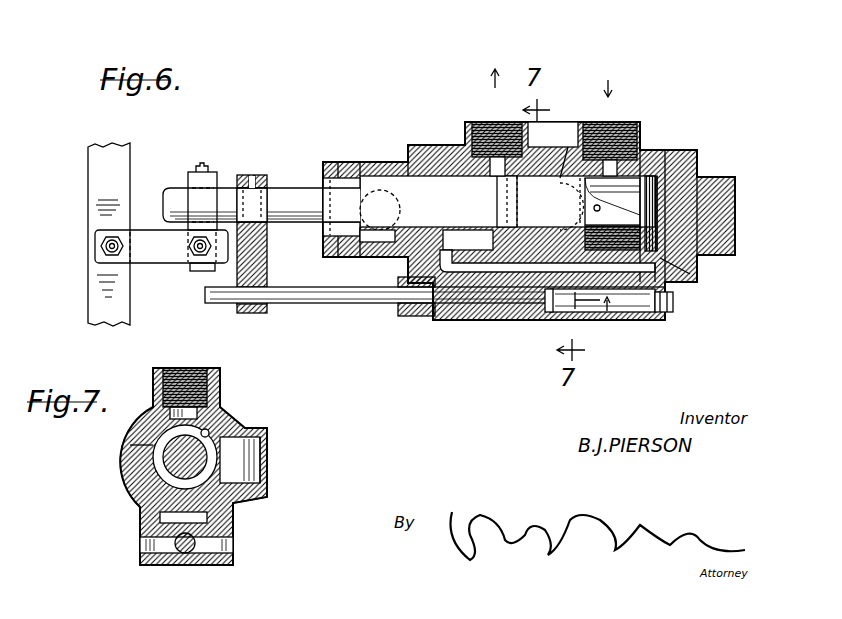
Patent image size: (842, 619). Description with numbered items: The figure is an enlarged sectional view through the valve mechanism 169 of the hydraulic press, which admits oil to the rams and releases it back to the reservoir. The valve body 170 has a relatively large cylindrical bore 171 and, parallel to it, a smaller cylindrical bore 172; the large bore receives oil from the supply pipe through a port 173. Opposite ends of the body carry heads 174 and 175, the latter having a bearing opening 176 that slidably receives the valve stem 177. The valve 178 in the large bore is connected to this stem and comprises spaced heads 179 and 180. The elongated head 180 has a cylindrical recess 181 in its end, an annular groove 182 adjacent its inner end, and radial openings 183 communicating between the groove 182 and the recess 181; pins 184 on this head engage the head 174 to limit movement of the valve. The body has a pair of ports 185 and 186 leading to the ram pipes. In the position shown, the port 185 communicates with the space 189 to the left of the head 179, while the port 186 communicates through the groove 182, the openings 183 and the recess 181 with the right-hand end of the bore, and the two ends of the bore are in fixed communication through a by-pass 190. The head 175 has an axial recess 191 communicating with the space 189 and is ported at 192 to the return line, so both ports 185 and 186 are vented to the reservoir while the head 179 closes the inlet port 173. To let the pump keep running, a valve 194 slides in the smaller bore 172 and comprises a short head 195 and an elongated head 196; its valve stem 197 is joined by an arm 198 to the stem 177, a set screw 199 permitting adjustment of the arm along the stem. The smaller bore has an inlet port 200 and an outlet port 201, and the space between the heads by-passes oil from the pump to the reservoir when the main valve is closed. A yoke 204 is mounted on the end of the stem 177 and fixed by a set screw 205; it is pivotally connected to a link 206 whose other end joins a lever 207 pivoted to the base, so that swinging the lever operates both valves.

In FIG. 6, the valve mechanism 169 is at (432, 143).
In FIG. 7, the valve mechanism 169 is at (129, 420).
In FIG. 6, the valve body 170 is at (642, 147).
In FIG. 7, the valve body 170 is at (209, 432).
In FIG. 6, the cylindrical bore 171 is at (553, 150).
In FIG. 7, the cylindrical bore 171 is at (150, 446).
In FIG. 6, the cylindrical bore 172 is at (485, 320).
In FIG. 6, the port 173 is at (550, 203).
In FIG. 7, the port 173 is at (255, 470).
In FIG. 6, the head 174 is at (712, 176).
In FIG. 6, the head 175 is at (372, 157).
In FIG. 6, the bearing opening 176 is at (324, 180).
In FIG. 6, the valve stem 177 is at (312, 224).
In FIG. 7, the valve stem 177 is at (168, 463).
In FIG. 6, the valve 178 is at (490, 200).
In FIG. 6, the head 179 is at (497, 213).
In FIG. 6, the head 180 is at (652, 174).
In FIG. 6, the cylindrical recess 181 is at (648, 168).
In FIG. 6, the annular groove 182 is at (547, 261).
In FIG. 6, the radial openings 183 is at (612, 214).
In FIG. 6, the pins 184 is at (705, 170).
In FIG. 6, the port 185 is at (518, 125).
In FIG. 7, the port 185 is at (186, 420).
In FIG. 6, the port 186 is at (610, 160).
In FIG. 6, the space 189 is at (468, 240).
In FIG. 6, the by-pass 190 is at (680, 276).
In FIG. 7, the by-pass 190 is at (150, 521).
In FIG. 6, the axial recess 191 is at (400, 235).
In FIG. 6, the port 192 is at (365, 210).
In FIG. 6, the valve 194 is at (609, 312).
In FIG. 7, the valve 194 is at (222, 565).
In FIG. 6, the head 195 is at (547, 313).
In FIG. 6, the head 196 is at (668, 318).
In FIG. 6, the valve stem 197 is at (380, 301).
In FIG. 6, the arm 198 is at (268, 268).
In FIG. 6, the set screw 199 is at (251, 174).
In FIG. 7, the inlet port 200 is at (235, 545).
In FIG. 6, the outlet port 201 is at (582, 314).
In FIG. 7, the outlet port 201 is at (160, 543).
In FIG. 6, the yoke 204 is at (190, 176).
In FIG. 6, the set screw 205 is at (203, 165).
In FIG. 6, the link 206 is at (158, 264).
In FIG. 6, the lever 207 is at (98, 195).